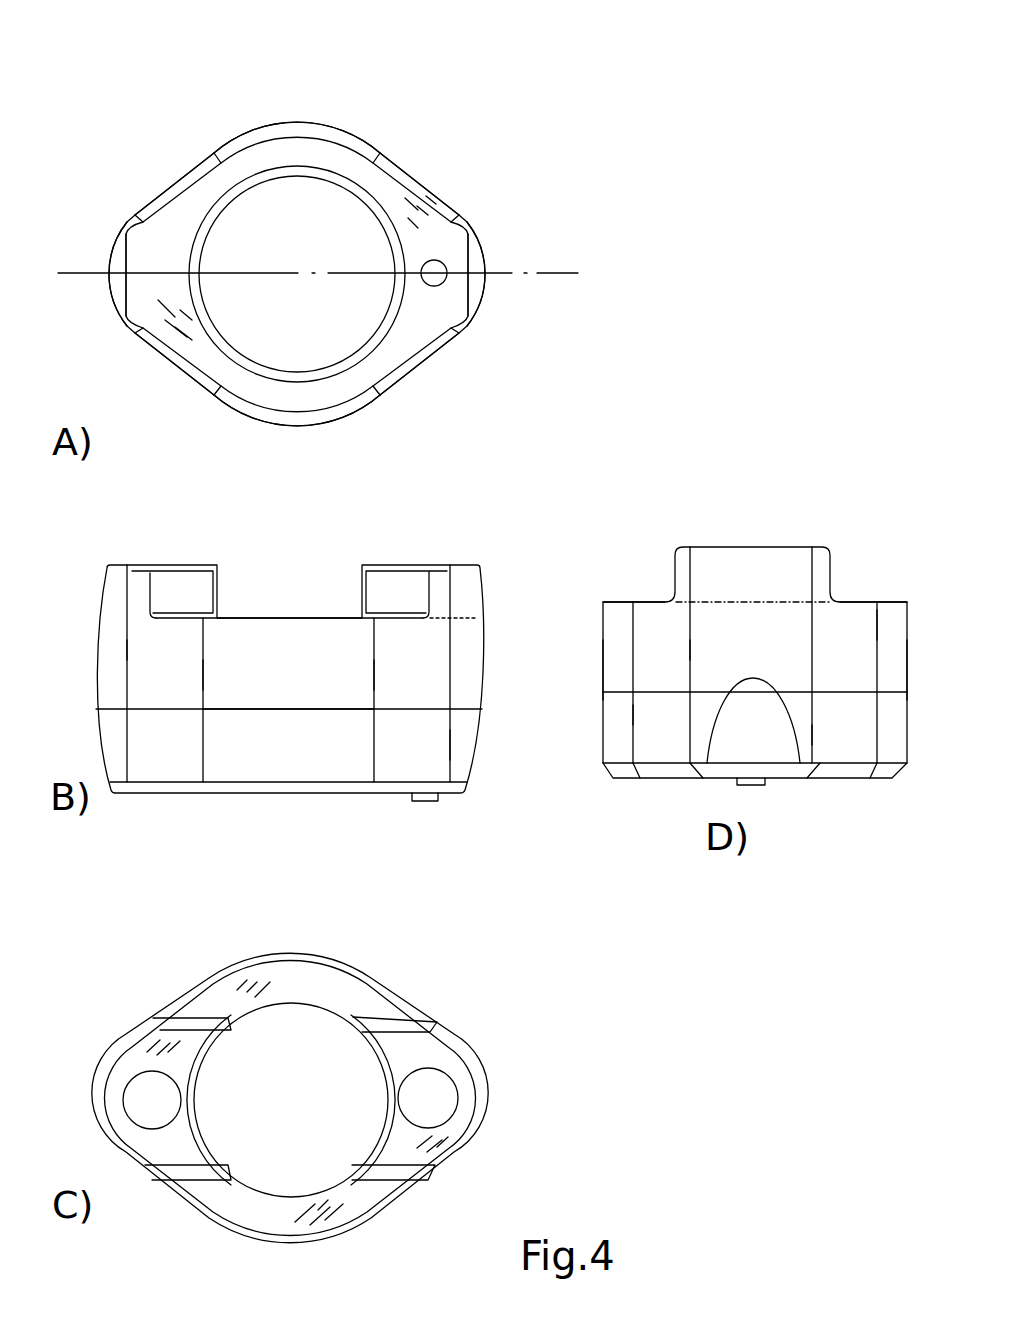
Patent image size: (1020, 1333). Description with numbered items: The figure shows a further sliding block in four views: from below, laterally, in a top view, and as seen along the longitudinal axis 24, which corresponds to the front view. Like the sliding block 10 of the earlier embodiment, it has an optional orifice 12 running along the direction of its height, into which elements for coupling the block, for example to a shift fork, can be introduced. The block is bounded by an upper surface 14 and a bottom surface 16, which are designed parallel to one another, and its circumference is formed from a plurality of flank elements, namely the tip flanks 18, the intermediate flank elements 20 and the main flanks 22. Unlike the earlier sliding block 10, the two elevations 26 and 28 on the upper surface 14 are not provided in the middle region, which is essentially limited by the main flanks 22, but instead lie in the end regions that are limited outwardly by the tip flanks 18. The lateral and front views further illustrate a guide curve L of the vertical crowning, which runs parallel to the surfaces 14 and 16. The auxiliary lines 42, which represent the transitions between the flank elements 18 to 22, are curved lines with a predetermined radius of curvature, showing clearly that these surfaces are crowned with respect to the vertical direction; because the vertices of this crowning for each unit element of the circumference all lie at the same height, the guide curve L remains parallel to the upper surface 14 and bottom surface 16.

In FIG. 4C, the sliding block 10 is at (640, 1009).
In FIG. 4A, the orifice 12 is at (330, 248).
In FIG. 4C, the orifice 12 is at (306, 1097).
In FIG. 4B, the upper surface 14 is at (261, 607).
In FIG. 4D, the upper surface 14 is at (647, 591).
In FIG. 4C, the upper surface 14 is at (362, 1006).
In FIG. 4A, the bottom surface 16 is at (176, 250).
In FIG. 4B, the bottom surface 16 is at (150, 795).
In FIG. 4D, the bottom surface 16 is at (844, 778).
In FIG. 4C, the bottom surface 16 is at (290, 1097).
In FIG. 4A, the tip flanks 18 is at (104, 243).
In FIG. 4B, the tip flanks 18 is at (123, 699).
In FIG. 4D, the tip flanks 18 is at (756, 600).
In FIG. 4A, the flank elements 20 is at (166, 178).
In FIG. 4B, the flank elements 20 is at (201, 652).
In FIG. 4D, the flank elements 20 is at (854, 668).
In FIG. 4A, the main flanks 22 is at (296, 111).
In FIG. 4B, the main flanks 22 is at (366, 652).
In FIG. 4D, the main flanks 22 is at (627, 668).
In FIG. 4A, the longitudinal axis 24 is at (560, 270).
In FIG. 4B, the elevation 26 is at (114, 592).
In FIG. 4D, the elevation 26 is at (821, 563).
In FIG. 4C, the elevation 26 is at (159, 1145).
In FIG. 4B, the elevation 28 is at (468, 585).
In FIG. 4C, the elevation 28 is at (433, 1049).
In FIG. 4B, the auxiliary lines 42 is at (128, 646).
In FIG. 4D, the auxiliary lines 42 is at (877, 628).
In FIG. 4B, the guide curve L is at (278, 711).
In FIG. 4D, the guide curve L is at (660, 692).